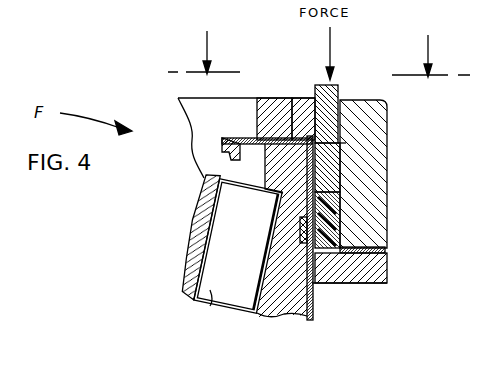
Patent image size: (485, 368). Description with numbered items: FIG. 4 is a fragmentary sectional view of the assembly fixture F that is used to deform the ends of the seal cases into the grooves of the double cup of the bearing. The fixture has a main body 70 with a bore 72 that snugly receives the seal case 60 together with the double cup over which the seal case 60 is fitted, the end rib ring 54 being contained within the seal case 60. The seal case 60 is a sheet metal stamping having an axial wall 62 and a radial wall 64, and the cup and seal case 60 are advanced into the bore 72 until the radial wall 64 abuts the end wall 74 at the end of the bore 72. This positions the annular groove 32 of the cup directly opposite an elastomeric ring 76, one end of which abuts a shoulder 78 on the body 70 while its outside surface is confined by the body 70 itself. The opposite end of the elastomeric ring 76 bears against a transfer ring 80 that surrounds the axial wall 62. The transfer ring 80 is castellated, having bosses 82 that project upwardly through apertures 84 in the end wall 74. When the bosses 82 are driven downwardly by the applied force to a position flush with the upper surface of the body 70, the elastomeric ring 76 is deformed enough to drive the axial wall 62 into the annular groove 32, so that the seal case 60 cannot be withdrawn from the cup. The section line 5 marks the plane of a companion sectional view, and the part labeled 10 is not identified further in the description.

The section line 5- 5 is at (319, 42).
The connector assembly 10 is at (192, 254).
The annular groove 32 is at (300, 231).
The end rib ring 54 is at (280, 166).
The seal case 60 is at (295, 118).
The axial wall 62 is at (292, 192).
The radial wall 64 is at (270, 140).
The main body 70 is at (380, 198).
The bore 72 is at (296, 318).
The end wall 74 is at (276, 106).
The elastomeric ring 76 is at (335, 222).
The shoulder 78 is at (333, 236).
The transfer ring 80 is at (327, 158).
The bosses 82 is at (330, 100).
The apertures 84 is at (318, 112).